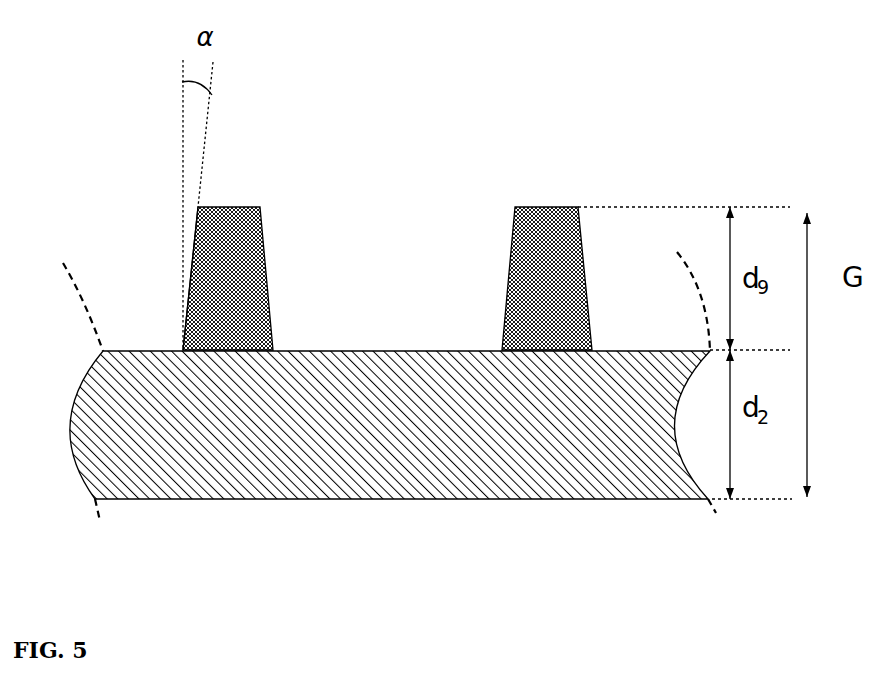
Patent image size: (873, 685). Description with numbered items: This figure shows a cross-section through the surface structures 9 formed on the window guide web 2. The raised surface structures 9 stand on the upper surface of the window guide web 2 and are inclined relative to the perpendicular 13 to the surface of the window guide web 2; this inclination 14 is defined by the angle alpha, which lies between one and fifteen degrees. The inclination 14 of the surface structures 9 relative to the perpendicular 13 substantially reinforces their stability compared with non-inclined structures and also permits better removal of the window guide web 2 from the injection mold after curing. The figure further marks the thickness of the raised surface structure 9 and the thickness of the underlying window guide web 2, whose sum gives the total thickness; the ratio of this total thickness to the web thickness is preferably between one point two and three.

The window guide web 2 is at (151, 340).
The surface structure 9 is at (497, 249).
The perpendicular to the surface of the window guide web 13 is at (162, 205).
The inclination of the surface structures relative to the perpendicular 14 is at (223, 206).